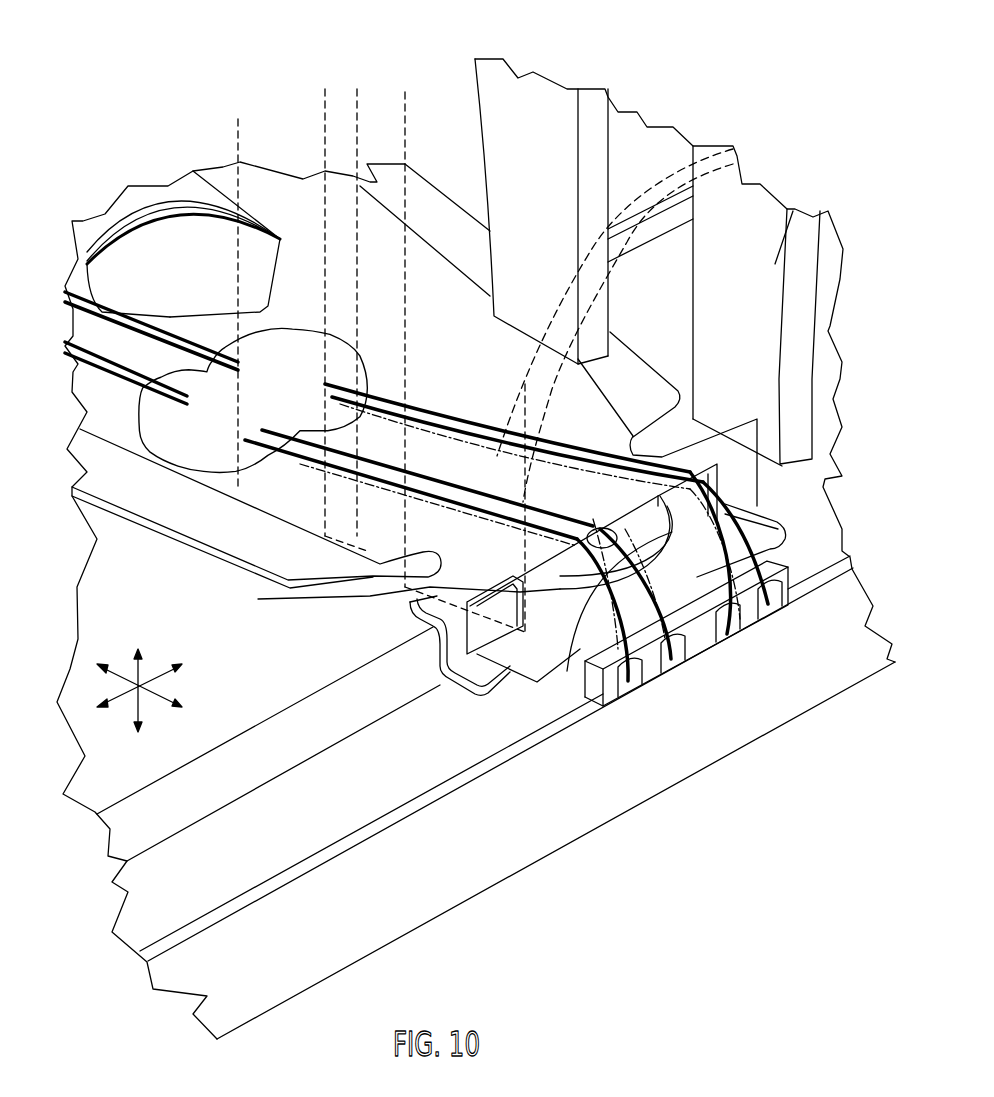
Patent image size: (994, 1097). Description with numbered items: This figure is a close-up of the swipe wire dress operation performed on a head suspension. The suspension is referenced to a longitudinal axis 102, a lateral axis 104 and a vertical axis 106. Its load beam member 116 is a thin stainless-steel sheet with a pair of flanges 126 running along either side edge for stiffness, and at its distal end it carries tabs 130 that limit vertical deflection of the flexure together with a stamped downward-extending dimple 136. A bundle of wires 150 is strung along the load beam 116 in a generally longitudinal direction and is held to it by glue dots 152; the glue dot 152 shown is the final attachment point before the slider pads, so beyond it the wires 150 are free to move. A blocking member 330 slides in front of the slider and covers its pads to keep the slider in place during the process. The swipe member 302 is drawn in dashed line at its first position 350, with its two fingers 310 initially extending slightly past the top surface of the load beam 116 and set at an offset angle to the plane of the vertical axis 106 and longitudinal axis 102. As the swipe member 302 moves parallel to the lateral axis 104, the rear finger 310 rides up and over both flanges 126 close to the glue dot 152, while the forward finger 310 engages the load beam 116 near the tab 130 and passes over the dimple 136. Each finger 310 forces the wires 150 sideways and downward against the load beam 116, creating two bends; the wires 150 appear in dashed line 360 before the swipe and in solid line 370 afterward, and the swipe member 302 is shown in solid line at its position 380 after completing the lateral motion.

The longitudinal axis 102 is at (163, 702).
The lateral axis 104 is at (163, 662).
The vertical axis 106 is at (148, 672).
The load beam member 116 is at (304, 220).
The flanges 126 is at (430, 203).
The tabs 130 is at (413, 627).
The dimple 136 is at (718, 622).
The wires 150 is at (176, 360).
The glue dot 152 is at (168, 417).
The swipe member 302 is at (813, 367).
The fingers 310 is at (723, 222).
The blocking member 330 is at (538, 801).
The first position 350 is at (253, 410).
The dashed line 360 is at (374, 407).
The solid line 370 is at (477, 425).
The position after completion of the lateral swipe motion 380 is at (788, 210).